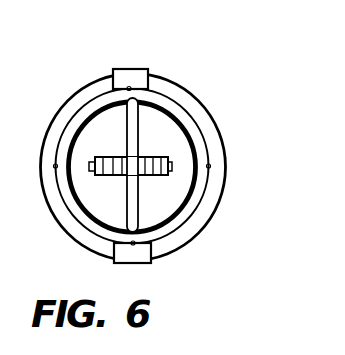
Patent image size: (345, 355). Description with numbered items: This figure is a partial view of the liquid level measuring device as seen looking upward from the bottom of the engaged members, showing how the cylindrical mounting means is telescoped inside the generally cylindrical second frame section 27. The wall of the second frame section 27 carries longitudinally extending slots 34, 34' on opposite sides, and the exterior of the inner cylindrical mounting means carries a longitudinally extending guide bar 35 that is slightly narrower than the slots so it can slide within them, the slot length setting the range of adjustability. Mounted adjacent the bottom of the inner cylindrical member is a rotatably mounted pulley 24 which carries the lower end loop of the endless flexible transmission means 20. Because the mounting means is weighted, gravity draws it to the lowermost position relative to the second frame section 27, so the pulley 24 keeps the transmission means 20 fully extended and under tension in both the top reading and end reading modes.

The flexible transmission means 20 is at (171, 172).
The pulley 24 is at (147, 156).
The second frame section 27 is at (216, 131).
The slot 34 is at (172, 67).
The slot 34' is at (174, 268).
The guide bar 35 is at (129, 68).